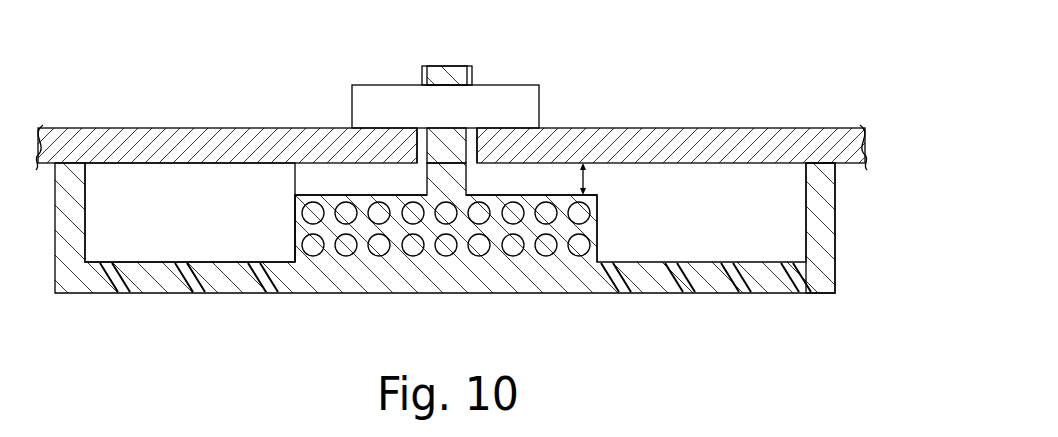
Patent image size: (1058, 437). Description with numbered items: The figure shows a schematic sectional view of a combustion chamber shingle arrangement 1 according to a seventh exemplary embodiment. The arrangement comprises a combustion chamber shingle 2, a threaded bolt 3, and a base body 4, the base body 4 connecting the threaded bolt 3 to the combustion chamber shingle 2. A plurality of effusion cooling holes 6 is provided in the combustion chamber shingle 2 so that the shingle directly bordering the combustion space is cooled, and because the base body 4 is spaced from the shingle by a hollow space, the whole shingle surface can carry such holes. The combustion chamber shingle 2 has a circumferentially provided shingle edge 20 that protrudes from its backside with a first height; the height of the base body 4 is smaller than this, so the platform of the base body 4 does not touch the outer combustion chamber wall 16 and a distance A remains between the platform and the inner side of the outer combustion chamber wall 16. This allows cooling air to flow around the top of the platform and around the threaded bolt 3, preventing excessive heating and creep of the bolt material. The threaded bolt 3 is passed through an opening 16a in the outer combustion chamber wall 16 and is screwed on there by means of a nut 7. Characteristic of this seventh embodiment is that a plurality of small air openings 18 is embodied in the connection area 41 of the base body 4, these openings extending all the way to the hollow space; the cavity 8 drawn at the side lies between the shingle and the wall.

The combustion chamber shingle arrangement 1 is at (169, 104).
The combustion chamber shingle 2 is at (650, 277).
The threaded bolt 3 is at (450, 78).
The base body 4 is at (303, 186).
The effusion cooling holes 6 is at (117, 280).
The nut 7 is at (381, 106).
The cavity 8 is at (151, 238).
The outer combustion chamber wall 16 is at (688, 145).
The opening 16a is at (469, 150).
The small air openings 18 is at (314, 246).
The shingle edge 20 is at (818, 213).
The connection area 41 is at (315, 227).
The distance A is at (588, 182).